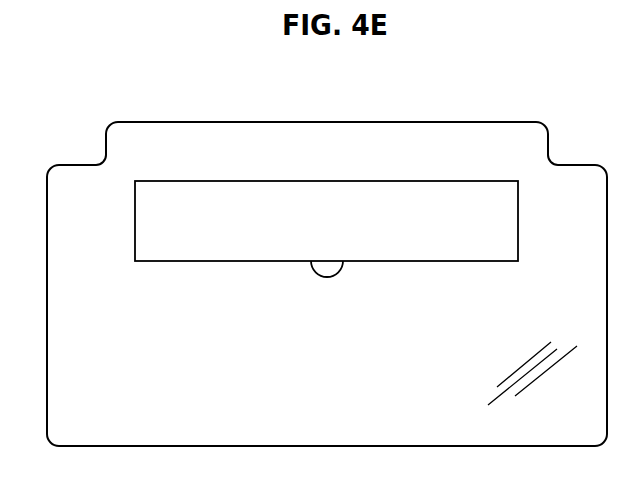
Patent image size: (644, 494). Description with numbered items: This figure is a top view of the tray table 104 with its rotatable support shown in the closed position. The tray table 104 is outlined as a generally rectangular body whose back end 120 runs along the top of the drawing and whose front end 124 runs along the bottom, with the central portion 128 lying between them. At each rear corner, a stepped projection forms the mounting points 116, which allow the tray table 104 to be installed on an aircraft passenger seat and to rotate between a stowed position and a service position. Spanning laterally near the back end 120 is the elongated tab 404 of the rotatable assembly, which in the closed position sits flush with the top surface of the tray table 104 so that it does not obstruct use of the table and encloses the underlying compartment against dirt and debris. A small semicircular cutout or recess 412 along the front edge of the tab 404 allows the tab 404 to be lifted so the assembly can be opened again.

The tray table 104 is at (314, 268).
The mounting points 116 is at (78, 131).
The back end 120 is at (235, 122).
The front end 124 is at (327, 447).
The central portion 128 is at (161, 370).
The elongated tab 404 is at (326, 220).
The cutout or recess 412 is at (334, 276).